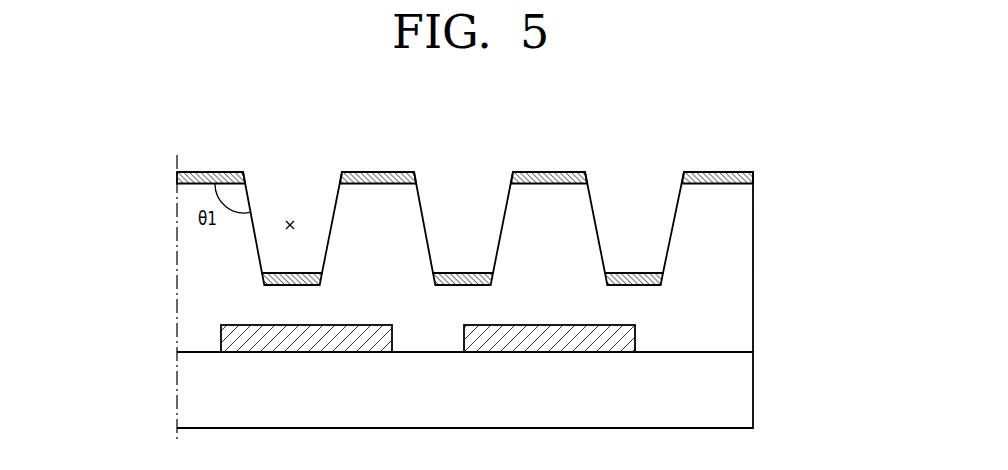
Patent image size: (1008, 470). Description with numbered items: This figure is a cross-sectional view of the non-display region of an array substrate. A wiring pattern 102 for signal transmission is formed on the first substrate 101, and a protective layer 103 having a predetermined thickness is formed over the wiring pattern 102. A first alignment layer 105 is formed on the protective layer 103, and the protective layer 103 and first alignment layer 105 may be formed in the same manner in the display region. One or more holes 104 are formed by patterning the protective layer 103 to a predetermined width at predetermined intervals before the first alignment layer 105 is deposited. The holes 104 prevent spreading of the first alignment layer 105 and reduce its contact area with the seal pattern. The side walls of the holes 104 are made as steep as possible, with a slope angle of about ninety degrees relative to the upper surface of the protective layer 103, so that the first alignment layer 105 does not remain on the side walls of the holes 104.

The first substrate 101 is at (183, 394).
The wiring pattern 102 is at (227, 342).
The protective layer 103 is at (183, 289).
The hole 104 is at (289, 221).
The first alignment layer 105 is at (377, 178).